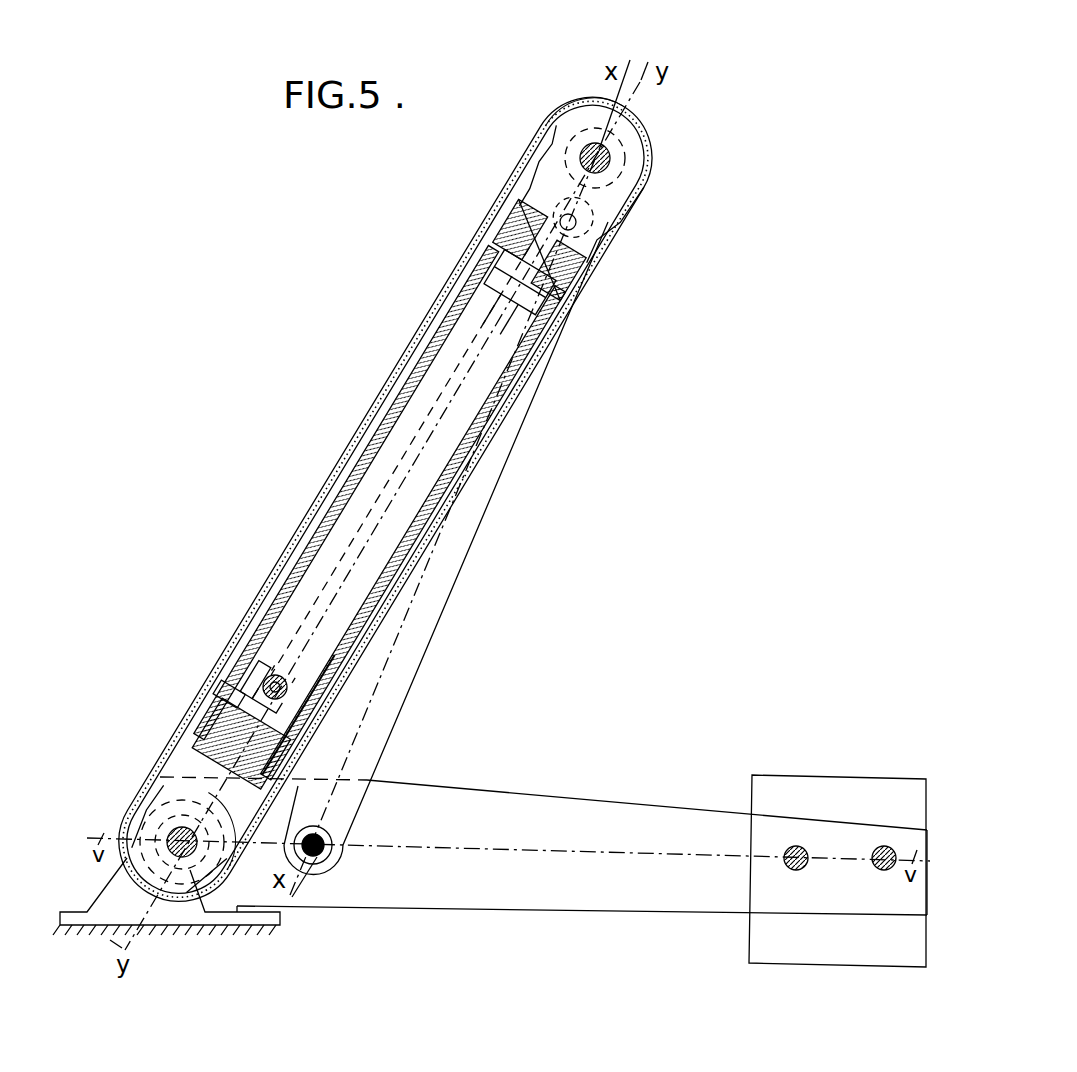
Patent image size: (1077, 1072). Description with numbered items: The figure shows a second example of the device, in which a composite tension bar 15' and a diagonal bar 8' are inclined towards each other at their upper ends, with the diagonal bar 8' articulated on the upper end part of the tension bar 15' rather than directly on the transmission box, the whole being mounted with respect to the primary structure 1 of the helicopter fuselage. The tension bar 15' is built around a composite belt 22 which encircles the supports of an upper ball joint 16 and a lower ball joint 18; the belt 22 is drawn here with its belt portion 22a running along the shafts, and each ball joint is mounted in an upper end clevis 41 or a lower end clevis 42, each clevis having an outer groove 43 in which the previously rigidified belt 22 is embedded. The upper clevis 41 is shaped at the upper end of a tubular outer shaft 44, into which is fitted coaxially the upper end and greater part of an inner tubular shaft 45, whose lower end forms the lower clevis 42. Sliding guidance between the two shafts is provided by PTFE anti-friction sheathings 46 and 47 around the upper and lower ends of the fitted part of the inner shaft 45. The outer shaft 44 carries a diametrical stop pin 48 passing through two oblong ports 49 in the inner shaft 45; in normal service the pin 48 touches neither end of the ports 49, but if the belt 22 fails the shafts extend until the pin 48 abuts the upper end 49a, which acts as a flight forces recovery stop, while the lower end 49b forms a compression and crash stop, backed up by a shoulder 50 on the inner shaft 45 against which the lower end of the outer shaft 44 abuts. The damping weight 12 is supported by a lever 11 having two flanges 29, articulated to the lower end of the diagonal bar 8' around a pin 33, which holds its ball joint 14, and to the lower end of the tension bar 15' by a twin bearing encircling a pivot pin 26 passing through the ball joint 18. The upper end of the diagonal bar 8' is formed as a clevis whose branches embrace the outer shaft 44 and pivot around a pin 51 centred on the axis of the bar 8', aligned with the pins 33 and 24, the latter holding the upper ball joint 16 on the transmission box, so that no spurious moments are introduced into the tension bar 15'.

The primary structure 1 is at (306, 935).
The diagonal bar 8' is at (446, 548).
The lever 11 is at (658, 798).
The damping weight 12 is at (791, 792).
The ball joint 14 is at (315, 856).
The composite tension bar 15' is at (386, 499).
The upper end ball joint 16 is at (565, 140).
The lower end ball joint 18 is at (160, 805).
The composite belt 22 is at (455, 287).
The inner tube wall 22a is at (340, 467).
The pin 24 is at (612, 160).
The pivot pin 26 is at (188, 852).
The flanges 29 is at (576, 815).
The pin 33 is at (322, 858).
The upper end clevis 41 is at (581, 118).
The lower end clevis 42 is at (143, 861).
The outer groove 43 is at (644, 120).
The tubular outer shaft 44 is at (527, 227).
The inner tubular shaft 45 is at (203, 757).
The anti-friction sheathing 46 is at (547, 305).
The anti-friction sheathing 47 is at (315, 706).
The diametrical stop pin 48 is at (256, 671).
The oblong ports 49 is at (263, 677).
The upper end of the oblong ports 49a is at (270, 668).
The lower end of the oblong ports 49b is at (258, 702).
The shoulder 50 is at (215, 722).
The pin 51 is at (561, 216).